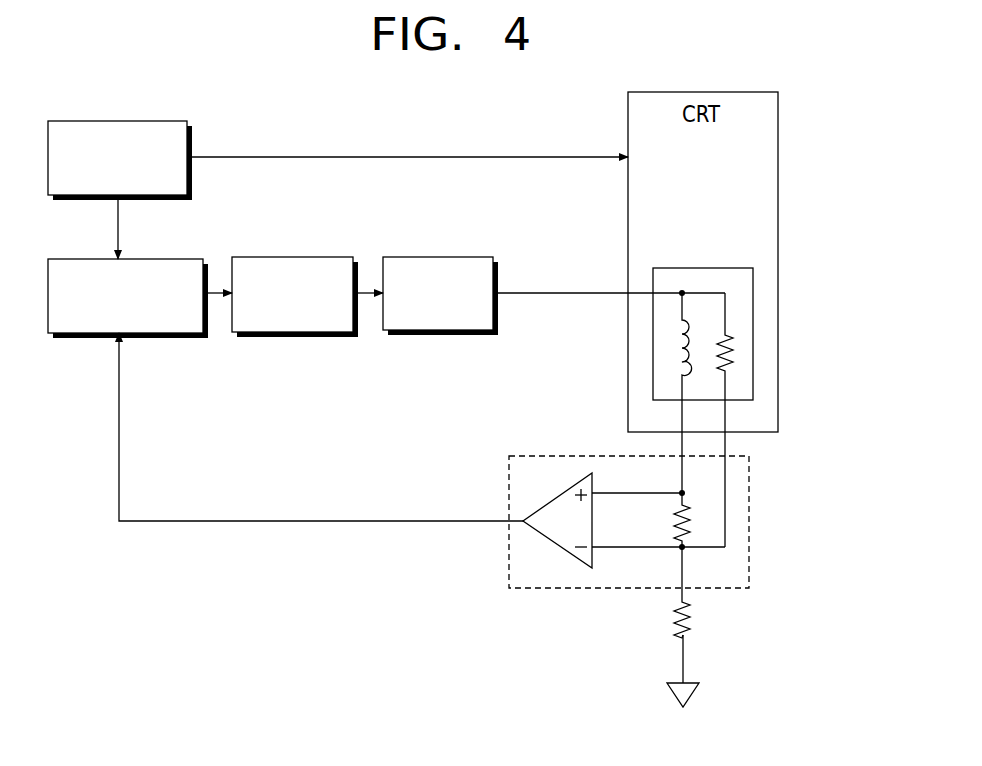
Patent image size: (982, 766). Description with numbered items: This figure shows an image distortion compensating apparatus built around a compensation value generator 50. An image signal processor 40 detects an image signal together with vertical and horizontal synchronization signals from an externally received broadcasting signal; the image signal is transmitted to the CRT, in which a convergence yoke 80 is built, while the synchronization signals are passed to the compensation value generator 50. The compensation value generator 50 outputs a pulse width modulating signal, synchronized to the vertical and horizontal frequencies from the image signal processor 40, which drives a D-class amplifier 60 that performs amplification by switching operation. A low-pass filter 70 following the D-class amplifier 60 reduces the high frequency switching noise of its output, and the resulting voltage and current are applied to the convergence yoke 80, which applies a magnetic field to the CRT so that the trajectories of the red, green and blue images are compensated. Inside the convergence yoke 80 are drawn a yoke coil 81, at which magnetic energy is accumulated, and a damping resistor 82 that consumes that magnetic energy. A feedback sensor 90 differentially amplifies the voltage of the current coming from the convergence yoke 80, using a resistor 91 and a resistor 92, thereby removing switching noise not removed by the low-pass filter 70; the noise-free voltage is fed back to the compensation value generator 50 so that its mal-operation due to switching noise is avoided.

The image signal processor 40 is at (113, 120).
The compensation value generator 50 is at (82, 340).
The D-class amplifier 60 is at (282, 340).
The low-pass filter (LPF) 70 is at (435, 340).
The convergence yoke 80 is at (703, 268).
The yoke coil 81 is at (676, 341).
The damping resistor 82 is at (732, 323).
The feedback sensor 90 is at (580, 588).
The resistor 91 is at (690, 520).
The resistor 92 is at (693, 613).